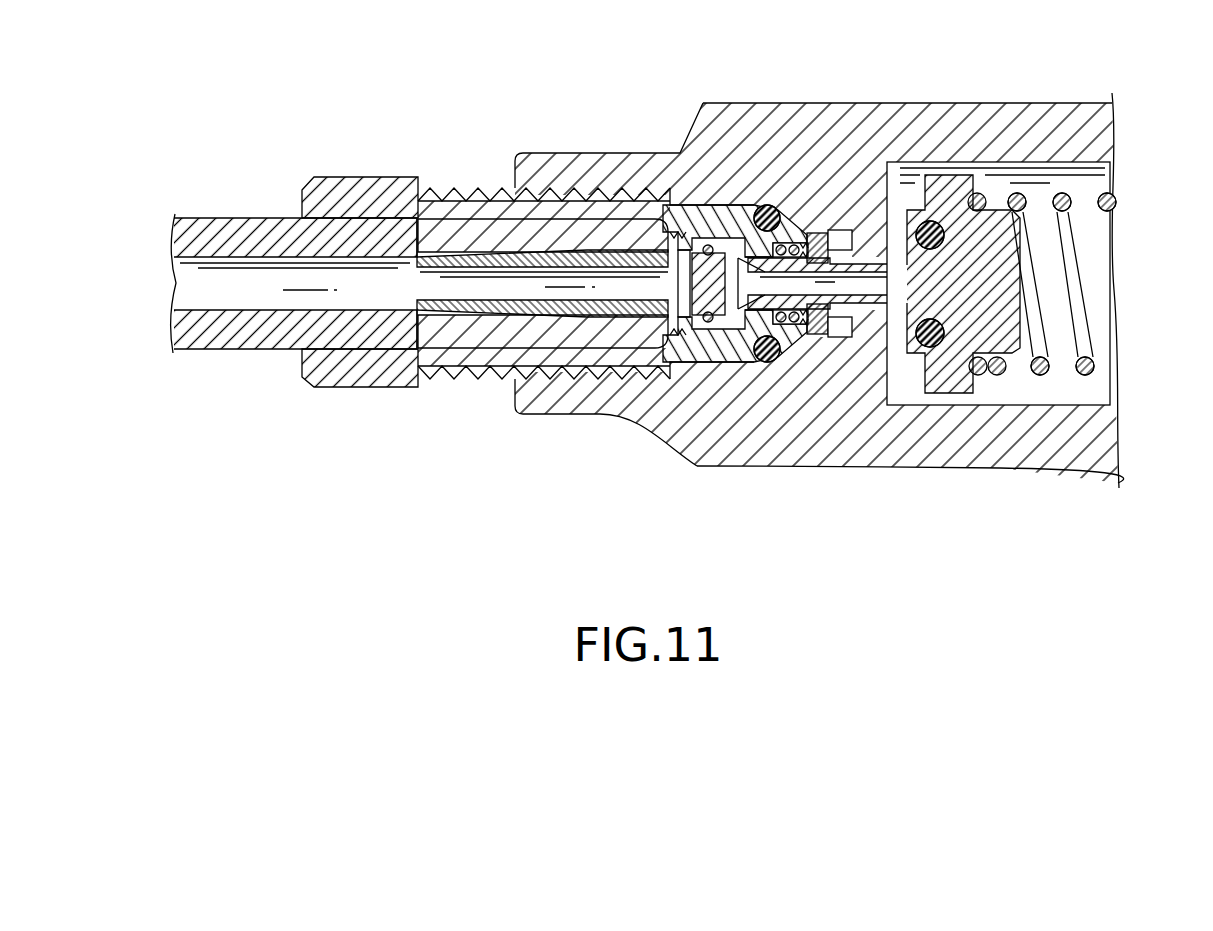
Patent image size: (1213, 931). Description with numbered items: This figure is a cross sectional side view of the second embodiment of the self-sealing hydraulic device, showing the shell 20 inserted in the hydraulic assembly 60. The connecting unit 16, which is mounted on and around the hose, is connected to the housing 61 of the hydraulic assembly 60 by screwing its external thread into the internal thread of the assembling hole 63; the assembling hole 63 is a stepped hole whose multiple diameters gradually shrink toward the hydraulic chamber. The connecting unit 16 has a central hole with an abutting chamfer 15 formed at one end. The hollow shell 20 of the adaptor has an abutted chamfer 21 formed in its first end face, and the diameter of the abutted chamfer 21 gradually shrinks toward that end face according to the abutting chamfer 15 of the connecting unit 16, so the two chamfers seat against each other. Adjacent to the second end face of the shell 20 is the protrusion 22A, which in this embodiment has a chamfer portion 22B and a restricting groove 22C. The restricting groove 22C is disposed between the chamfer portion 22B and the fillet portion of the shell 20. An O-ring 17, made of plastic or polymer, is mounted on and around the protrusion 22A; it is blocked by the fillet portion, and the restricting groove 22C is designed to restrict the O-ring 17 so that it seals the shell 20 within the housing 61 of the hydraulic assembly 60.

The abutting chamfer 15 is at (633, 337).
The connecting unit 16 is at (375, 190).
The O-ring 17 is at (763, 208).
The shell 20 is at (717, 352).
The abutted chamfer 21 is at (600, 200).
The protrusion 22A is at (790, 243).
The chamfer portion 22B is at (800, 337).
The restricting groove 22C is at (768, 352).
The hydraulic assembly 60 is at (1012, 86).
The housing 61 is at (1100, 136).
The assembling hole 63 is at (853, 248).